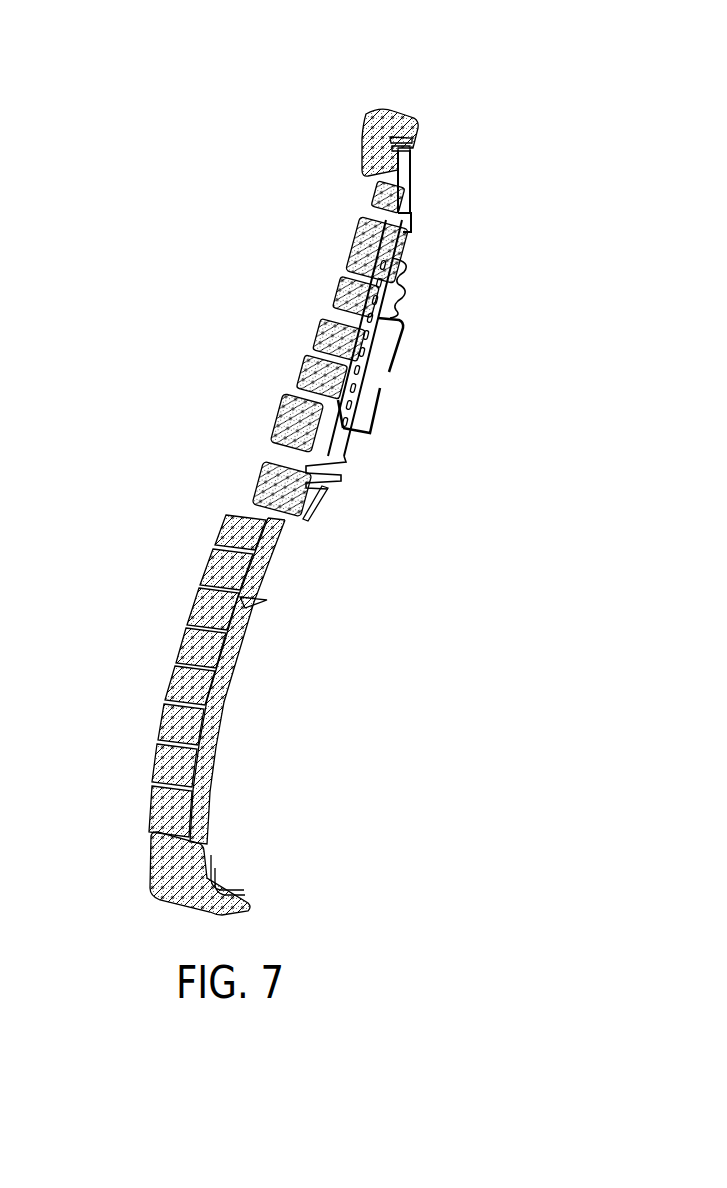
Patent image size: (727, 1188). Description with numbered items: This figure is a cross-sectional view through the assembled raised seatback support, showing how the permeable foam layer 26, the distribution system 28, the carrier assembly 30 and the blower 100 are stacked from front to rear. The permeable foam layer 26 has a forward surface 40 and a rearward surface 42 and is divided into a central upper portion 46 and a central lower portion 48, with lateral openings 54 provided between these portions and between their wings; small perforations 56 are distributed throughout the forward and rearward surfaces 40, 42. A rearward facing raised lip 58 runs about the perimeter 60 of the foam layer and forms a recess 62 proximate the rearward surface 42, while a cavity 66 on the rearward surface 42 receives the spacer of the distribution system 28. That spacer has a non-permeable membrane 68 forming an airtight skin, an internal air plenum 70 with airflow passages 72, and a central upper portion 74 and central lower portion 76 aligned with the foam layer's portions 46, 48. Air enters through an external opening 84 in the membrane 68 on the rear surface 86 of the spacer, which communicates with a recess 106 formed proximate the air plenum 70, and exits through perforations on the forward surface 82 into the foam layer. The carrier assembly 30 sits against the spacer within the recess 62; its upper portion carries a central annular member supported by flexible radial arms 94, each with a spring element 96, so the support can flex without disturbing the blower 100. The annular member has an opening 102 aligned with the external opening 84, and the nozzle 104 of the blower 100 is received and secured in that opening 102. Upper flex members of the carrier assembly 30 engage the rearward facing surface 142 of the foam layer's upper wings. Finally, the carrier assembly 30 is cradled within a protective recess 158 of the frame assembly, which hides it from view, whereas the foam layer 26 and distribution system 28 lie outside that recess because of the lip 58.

The rearward facing raised lip 58 is at (378, 118).
The perimeter 60 is at (398, 112).
The recess 62 is at (413, 128).
The cavity 66 is at (408, 150).
The protective recess 158 is at (413, 230).
The flexible radial arms 94 is at (405, 248).
The spring element 96 is at (400, 290).
The central upper portion 74 is at (400, 300).
The opening 102 is at (400, 347).
The air plenum 70 is at (370, 375).
The external opening 84 is at (338, 391).
The nozzle 104 is at (343, 402).
The blower 100 is at (373, 423).
The airflow passages 72 is at (338, 288).
The central upper portion 46 is at (330, 312).
The recess 106 is at (318, 372).
The permeable foam layer 26 is at (263, 488).
The lateral openings 54 is at (317, 476).
The carrier assembly 30 is at (312, 507).
The perforations 56 is at (270, 557).
The central lower portion 76 is at (262, 615).
The rear surface 86 is at (238, 600).
The non-permeable membrane 68 is at (237, 650).
The central lower portion 48 is at (183, 647).
The forward surface 82 is at (208, 688).
The distribution system 28 is at (208, 737).
The rearward facing surface 142 is at (195, 790).
The forward surface 40 is at (153, 795).
The rearward surface 42 is at (210, 850).